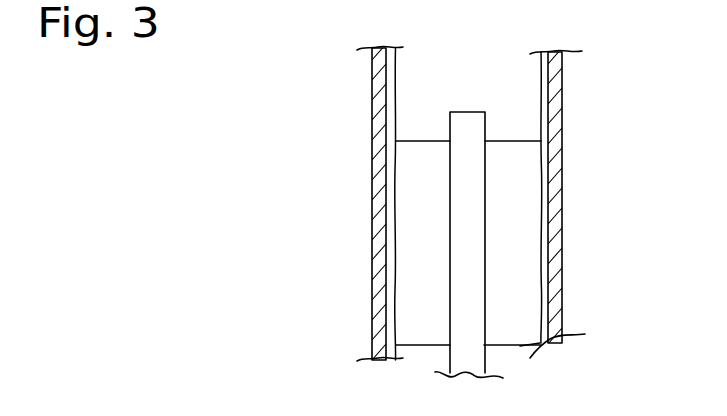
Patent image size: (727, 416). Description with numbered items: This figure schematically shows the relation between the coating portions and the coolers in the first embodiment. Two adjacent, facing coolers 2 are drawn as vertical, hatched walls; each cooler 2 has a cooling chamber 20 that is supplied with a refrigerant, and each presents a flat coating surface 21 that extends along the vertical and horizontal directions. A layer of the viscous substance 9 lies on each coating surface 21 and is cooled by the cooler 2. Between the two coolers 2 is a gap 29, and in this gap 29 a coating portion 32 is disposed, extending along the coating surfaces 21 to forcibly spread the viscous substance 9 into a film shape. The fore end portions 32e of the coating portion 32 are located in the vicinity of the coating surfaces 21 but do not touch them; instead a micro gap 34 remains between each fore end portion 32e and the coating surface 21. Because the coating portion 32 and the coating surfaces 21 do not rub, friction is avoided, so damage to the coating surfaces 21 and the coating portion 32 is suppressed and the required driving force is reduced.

The cooler 2 is at (375, 338).
The viscous substance 9 is at (391, 62).
The cooling chamber 20 is at (358, 170).
The coating surface 21 is at (384, 290).
The gap 29 is at (528, 83).
The coating portion 32 is at (417, 150).
The fore end portion 32e is at (400, 202).
The micro gap 34 is at (388, 262).